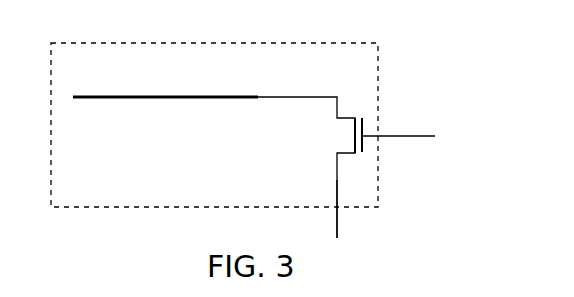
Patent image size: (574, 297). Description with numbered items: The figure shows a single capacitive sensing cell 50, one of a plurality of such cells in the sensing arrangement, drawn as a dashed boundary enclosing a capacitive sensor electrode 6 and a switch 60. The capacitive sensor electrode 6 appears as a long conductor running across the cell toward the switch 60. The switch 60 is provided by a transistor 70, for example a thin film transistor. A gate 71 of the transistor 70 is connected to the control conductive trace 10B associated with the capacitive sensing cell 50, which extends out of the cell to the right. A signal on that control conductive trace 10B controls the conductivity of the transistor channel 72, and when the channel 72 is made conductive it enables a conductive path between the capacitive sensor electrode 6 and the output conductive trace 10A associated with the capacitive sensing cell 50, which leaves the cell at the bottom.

The capacitive sensing cell 50 is at (347, 43).
The capacitive sensor electrode 6 is at (118, 98).
The transistor 70 is at (310, 142).
The channel 72 is at (355, 135).
The gate 71 is at (364, 148).
The switch 60 is at (373, 121).
The output conductive trace 10A is at (338, 225).
The control conductive trace 10B is at (422, 136).